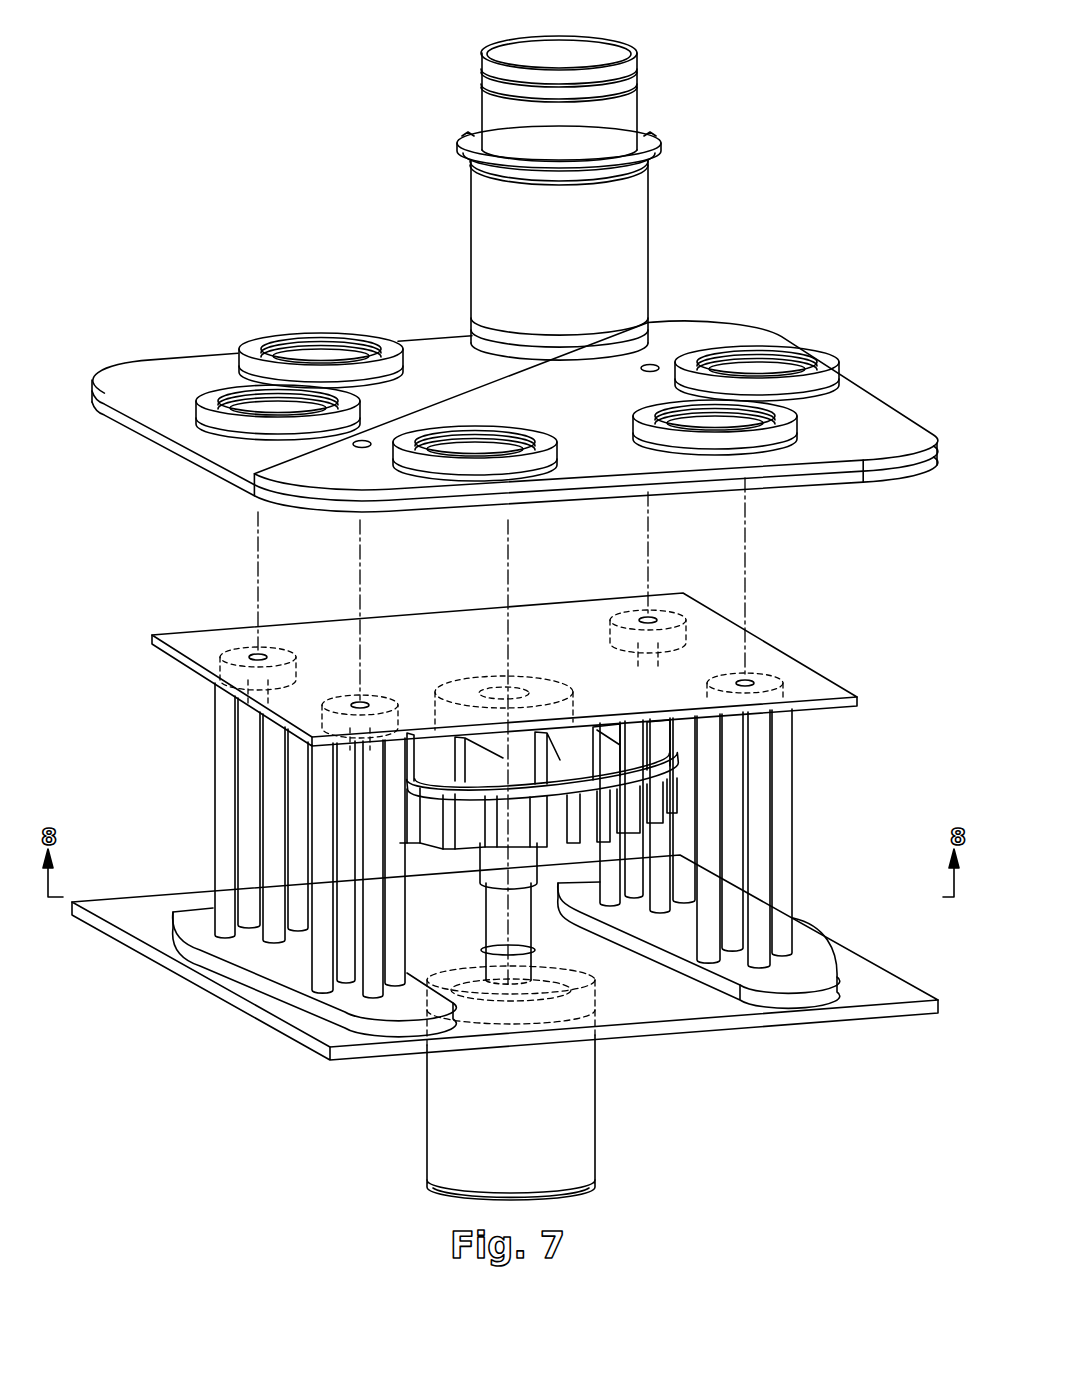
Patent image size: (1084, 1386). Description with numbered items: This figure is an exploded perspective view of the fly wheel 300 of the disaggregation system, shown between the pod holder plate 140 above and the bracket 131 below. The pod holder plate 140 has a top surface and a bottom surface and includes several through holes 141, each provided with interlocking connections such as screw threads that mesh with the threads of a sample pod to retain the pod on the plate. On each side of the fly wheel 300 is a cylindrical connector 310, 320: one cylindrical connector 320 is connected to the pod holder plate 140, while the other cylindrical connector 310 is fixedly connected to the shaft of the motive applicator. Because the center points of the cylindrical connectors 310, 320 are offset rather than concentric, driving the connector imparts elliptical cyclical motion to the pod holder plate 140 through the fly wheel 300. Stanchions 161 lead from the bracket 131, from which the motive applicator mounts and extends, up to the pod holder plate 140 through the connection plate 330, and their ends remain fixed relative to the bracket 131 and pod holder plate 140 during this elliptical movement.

The bracket 131 is at (293, 1013).
The pod holder plate 140 is at (861, 413).
The through hole 141 is at (218, 398).
The stanchion 161 is at (300, 807).
The fly wheel 300 is at (693, 775).
The cylindrical connector 310 is at (489, 850).
The cylindrical connector 320 is at (512, 690).
The connection plate 330 is at (178, 634).